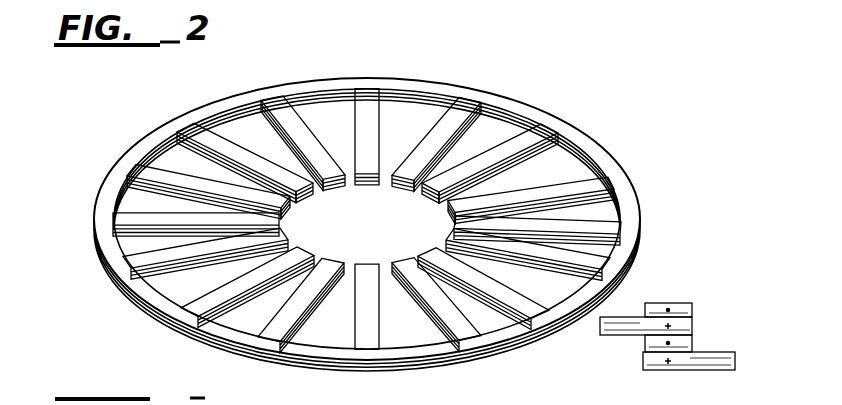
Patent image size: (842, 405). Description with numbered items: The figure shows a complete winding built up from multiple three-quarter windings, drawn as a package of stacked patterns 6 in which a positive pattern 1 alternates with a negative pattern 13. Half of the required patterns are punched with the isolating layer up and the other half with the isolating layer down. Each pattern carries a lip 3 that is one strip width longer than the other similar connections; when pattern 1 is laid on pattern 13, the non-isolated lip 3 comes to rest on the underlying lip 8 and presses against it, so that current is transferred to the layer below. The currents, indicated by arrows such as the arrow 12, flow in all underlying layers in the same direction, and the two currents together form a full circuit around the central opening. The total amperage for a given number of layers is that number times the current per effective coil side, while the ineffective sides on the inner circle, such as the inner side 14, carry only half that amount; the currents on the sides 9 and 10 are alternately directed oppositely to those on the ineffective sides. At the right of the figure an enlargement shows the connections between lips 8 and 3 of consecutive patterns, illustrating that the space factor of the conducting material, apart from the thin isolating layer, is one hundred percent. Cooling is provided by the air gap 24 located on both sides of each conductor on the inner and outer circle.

The positive pattern 1 is at (518, 104).
The lip 3 is at (383, 190).
The stacked patterns 6 is at (592, 150).
The lip 8 is at (373, 192).
The side 9 is at (115, 183).
The side 10 is at (108, 251).
The arrow 12 is at (605, 265).
The negative pattern 13 is at (312, 88).
The inner side 14 is at (311, 263).
The air gap 24 is at (493, 348).